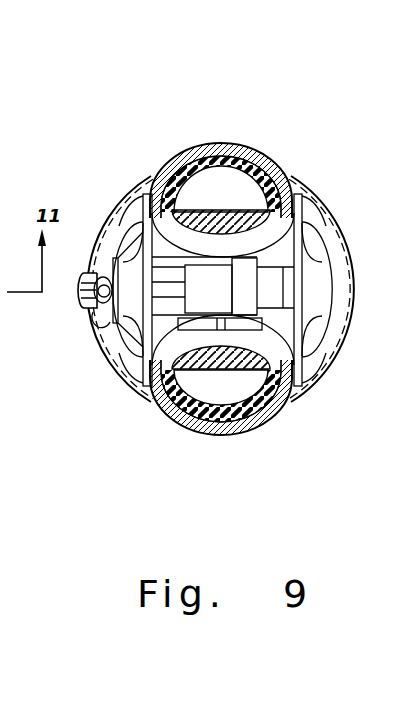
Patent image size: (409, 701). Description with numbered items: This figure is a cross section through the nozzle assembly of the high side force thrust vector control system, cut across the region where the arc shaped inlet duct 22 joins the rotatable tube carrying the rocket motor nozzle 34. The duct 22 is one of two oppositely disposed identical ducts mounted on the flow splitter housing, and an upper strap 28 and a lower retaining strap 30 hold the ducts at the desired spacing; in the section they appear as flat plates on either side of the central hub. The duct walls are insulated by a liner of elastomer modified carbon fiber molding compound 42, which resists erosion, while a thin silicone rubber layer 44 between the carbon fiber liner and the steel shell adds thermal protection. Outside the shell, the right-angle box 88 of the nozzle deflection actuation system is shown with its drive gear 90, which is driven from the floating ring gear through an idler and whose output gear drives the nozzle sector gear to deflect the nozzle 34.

The arc shaped inlet duct 22 is at (175, 153).
The elastomer modified carbon fiber molding compound 42 is at (253, 170).
The silicone rubber layer 44 is at (282, 163).
The lower retaining strap 30 is at (298, 268).
The upper strap 28 is at (148, 232).
The rocket motor nozzle 34 is at (0, 177).
The right-angle box 88 is at (195, 297).
The right-angle box drive gear 90 is at (87, 300).